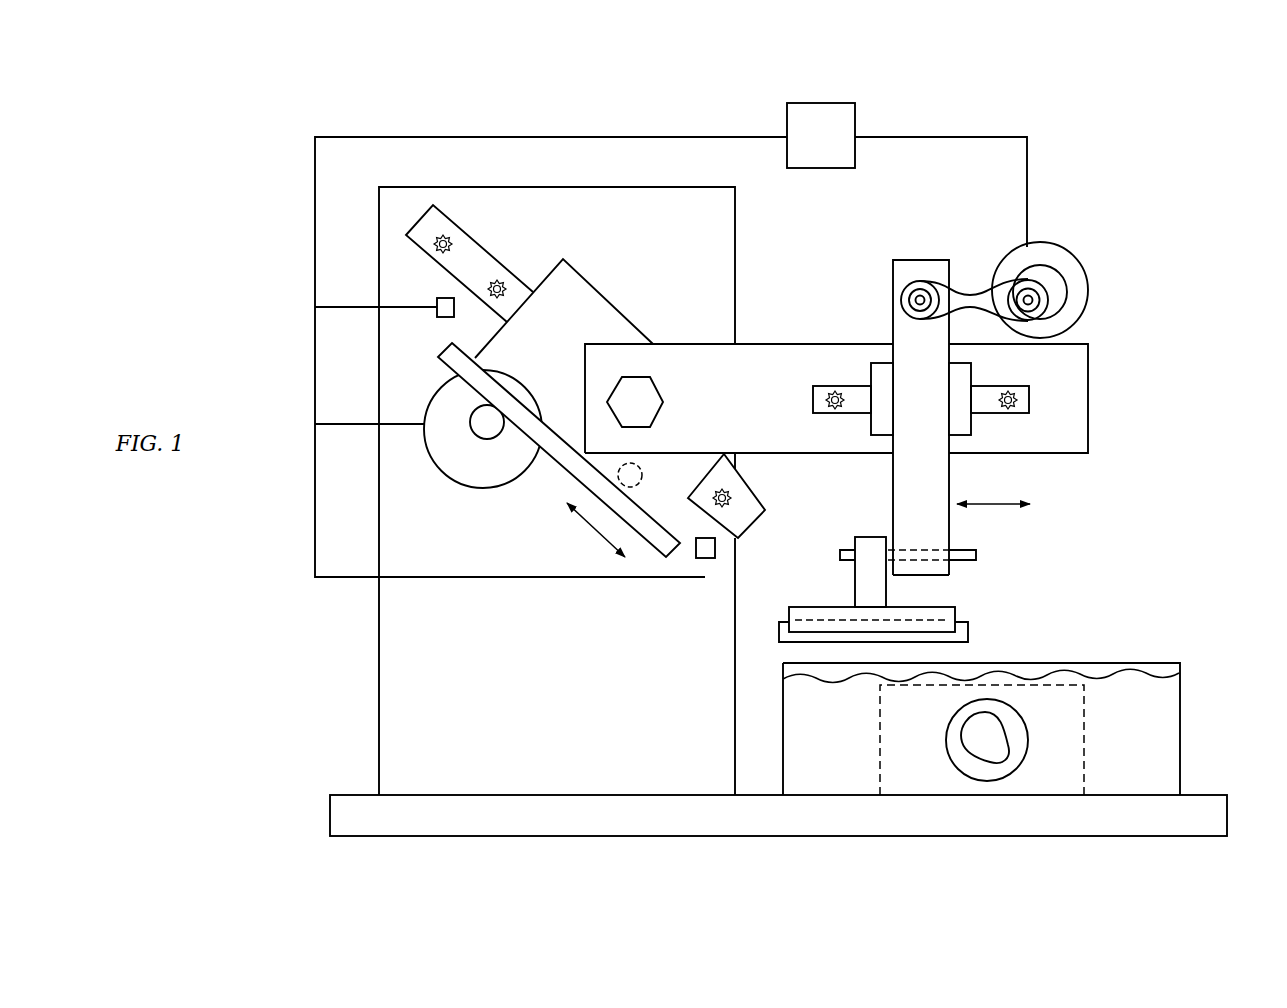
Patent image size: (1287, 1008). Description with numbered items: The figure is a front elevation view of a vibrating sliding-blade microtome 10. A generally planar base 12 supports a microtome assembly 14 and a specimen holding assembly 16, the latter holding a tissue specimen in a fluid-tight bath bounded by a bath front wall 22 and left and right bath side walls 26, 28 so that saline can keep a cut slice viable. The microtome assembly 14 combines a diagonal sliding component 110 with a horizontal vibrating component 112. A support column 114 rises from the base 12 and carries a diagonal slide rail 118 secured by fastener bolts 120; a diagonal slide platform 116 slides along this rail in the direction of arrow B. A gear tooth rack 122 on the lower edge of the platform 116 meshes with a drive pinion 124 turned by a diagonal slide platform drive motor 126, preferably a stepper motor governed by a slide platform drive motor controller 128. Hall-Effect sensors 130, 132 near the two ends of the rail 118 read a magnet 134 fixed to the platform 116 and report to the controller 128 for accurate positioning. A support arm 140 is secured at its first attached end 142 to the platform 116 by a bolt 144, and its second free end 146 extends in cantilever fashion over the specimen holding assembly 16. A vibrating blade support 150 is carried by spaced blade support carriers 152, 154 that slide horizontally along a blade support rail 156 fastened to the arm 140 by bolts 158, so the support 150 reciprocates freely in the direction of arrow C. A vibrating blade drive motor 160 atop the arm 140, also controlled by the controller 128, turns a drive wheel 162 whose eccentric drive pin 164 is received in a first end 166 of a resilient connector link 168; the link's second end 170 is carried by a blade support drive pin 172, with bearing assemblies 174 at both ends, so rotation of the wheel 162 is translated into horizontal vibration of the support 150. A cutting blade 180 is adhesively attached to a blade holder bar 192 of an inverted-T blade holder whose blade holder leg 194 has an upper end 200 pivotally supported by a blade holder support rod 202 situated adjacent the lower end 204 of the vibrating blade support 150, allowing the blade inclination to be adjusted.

The vibrating sliding-blade microtome 10 is at (1128, 138).
The base 12 is at (344, 818).
The microtome assembly 14 is at (966, 359).
The specimen holding assembly 16 is at (1000, 692).
The bath front wall 22 is at (1157, 735).
The left bath side wall 26 is at (782, 747).
The right bath side wall 28 is at (1182, 693).
The diagonal sliding component 110 is at (554, 450).
The horizontal vibrating component 112 is at (985, 270).
The support column 114 is at (403, 673).
The diagonal slide platform 116 is at (583, 303).
The diagonal slide rail 118 is at (473, 262).
The fastener bolts 120 is at (457, 237).
The gear tooth rack 122 is at (660, 553).
The drive pinion 124 is at (485, 432).
The diagonal slide platform drive motor 126 is at (438, 444).
The slide platform drive motor controller 128 is at (832, 118).
The Hall-Effect sensor 130 is at (443, 307).
The Hall-Effect sensor 132 is at (705, 559).
The magnet 134 is at (642, 475).
The support arm 140 is at (739, 362).
The first attached end 142 is at (612, 358).
The bolt 144 is at (640, 385).
The second free end 146 is at (1070, 388).
The vibrating blade support 150 is at (935, 477).
The blade support carrier 152 is at (963, 377).
The blade support carrier 154 is at (882, 382).
The blade support rail 156 is at (982, 407).
The bolts 158 is at (1013, 392).
The vibrating blade drive motor 160 is at (1075, 280).
The drive wheel 162 is at (1052, 283).
The drive pin 164 is at (1040, 283).
The first end 166 is at (1060, 304).
The connector link 168 is at (968, 298).
The second end 170 is at (920, 292).
The blade support drive pin 172 is at (925, 297).
The bearing assemblies 174 is at (903, 286).
The cutting blade 180 is at (962, 628).
The blade holder bar 192 is at (822, 615).
The blade holder leg 194 is at (868, 588).
The upper end 200 is at (920, 549).
The blade holder support rod 202 is at (967, 554).
The lower end 204 is at (980, 573).